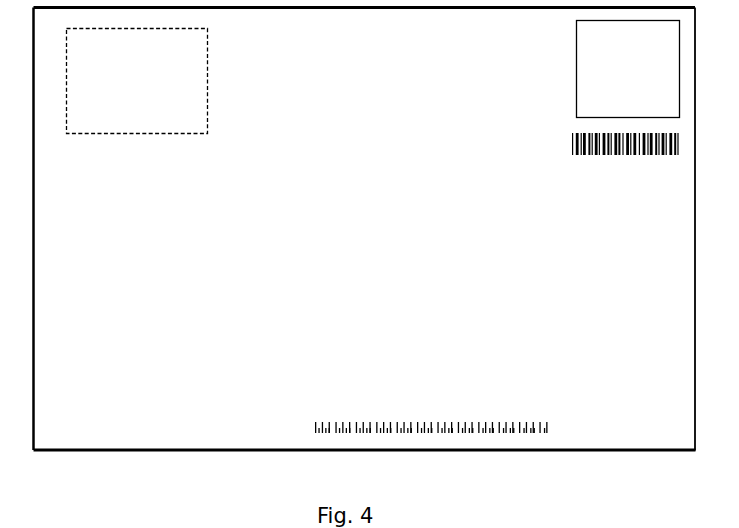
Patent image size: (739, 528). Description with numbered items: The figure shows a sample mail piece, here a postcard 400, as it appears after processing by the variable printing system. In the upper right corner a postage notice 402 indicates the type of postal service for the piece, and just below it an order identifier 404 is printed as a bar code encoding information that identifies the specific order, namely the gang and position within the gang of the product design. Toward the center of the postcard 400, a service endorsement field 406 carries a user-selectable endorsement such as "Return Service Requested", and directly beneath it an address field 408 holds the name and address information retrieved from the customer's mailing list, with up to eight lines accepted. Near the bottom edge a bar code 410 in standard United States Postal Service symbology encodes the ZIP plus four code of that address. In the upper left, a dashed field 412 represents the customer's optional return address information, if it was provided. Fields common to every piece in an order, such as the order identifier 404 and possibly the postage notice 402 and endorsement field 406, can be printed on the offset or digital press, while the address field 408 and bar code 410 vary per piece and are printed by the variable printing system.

The postcard 400 is at (134, 455).
The postage notice 402 is at (573, 61).
The order identifier 404 is at (558, 150).
The service endorsement field 406 is at (417, 237).
The address field 408 is at (397, 299).
The bar code 410 is at (337, 410).
The field 412 is at (137, 141).